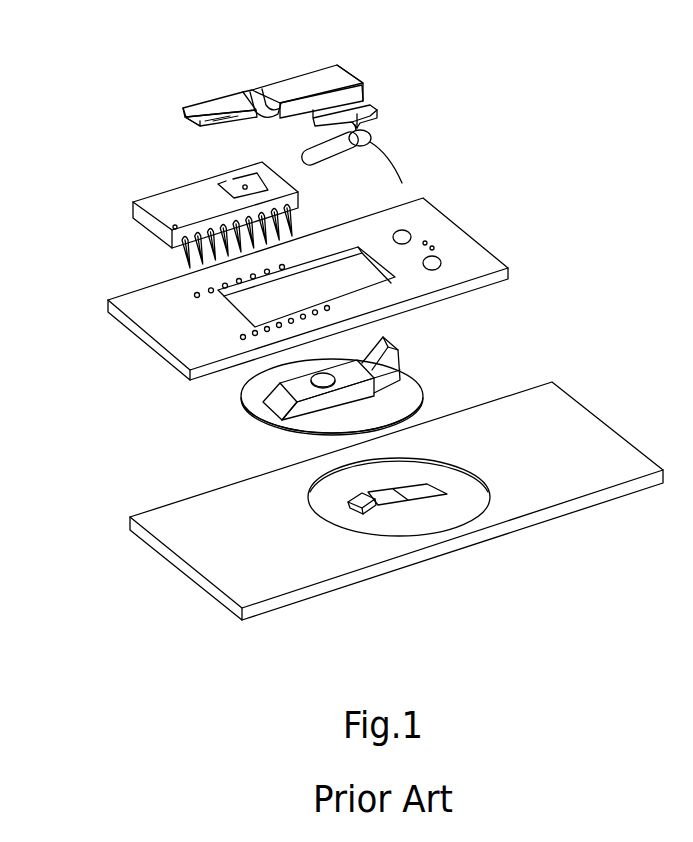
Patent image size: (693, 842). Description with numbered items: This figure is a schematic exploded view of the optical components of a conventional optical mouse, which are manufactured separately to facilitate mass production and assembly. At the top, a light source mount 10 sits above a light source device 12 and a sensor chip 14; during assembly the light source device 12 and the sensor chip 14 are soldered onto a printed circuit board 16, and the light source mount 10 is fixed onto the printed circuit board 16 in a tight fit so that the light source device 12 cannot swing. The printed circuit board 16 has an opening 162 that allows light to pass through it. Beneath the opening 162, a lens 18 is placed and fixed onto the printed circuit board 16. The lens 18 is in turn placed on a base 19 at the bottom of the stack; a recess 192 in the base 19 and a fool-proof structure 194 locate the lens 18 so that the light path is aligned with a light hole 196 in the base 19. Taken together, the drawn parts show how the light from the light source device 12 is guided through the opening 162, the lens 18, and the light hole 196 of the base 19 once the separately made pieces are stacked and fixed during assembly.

The light source mount 10 is at (345, 73).
The light source device 12 is at (372, 132).
The sensor chip 14 is at (173, 202).
The printed circuit board 16 is at (463, 262).
The opening 162 is at (265, 300).
The lens 18 is at (383, 343).
The base 19 is at (577, 427).
The recess 192 is at (486, 512).
The fool-proof structure 194 is at (350, 510).
The light hole 196 is at (423, 492).